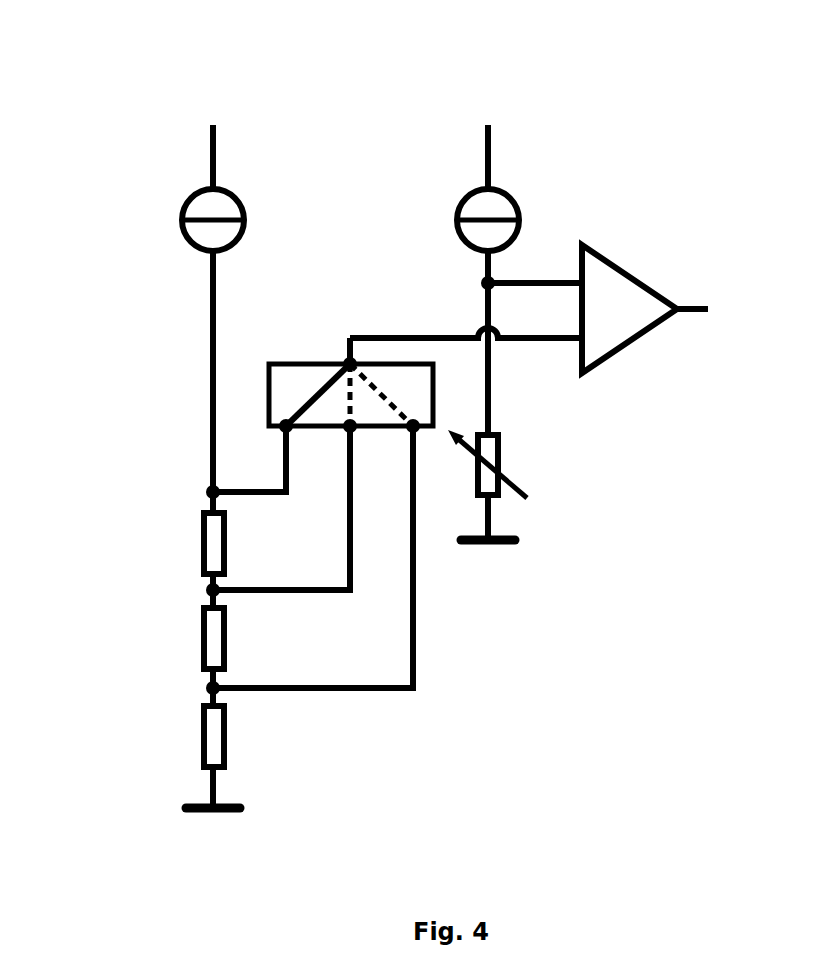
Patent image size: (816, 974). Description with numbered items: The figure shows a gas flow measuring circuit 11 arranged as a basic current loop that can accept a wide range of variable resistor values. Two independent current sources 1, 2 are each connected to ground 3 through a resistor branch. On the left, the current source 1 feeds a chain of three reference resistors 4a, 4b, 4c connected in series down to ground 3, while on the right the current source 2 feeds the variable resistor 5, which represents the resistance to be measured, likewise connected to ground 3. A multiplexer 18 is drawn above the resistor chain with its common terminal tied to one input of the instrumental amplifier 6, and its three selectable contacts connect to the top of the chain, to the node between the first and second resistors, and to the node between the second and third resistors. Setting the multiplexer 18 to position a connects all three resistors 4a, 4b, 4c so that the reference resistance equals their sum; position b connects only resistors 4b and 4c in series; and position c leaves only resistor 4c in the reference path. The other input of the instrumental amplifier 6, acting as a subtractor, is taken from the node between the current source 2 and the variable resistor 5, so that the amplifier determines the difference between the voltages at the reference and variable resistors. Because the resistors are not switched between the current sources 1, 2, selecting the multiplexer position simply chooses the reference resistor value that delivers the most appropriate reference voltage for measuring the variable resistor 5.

The gas flow measuring circuit 11 is at (136, 135).
The current source 1 is at (225, 185).
The current source 2 is at (523, 212).
The multiplexer 18 is at (303, 364).
The position a is at (280, 430).
The position b is at (343, 430).
The position c is at (408, 430).
The reference resistor 4a is at (227, 552).
The reference resistor 4b is at (227, 648).
The reference resistor 4c is at (227, 737).
The variable resistor 5 is at (502, 458).
The instrumental amplifier 6 is at (625, 335).
The ground 3 is at (242, 810).